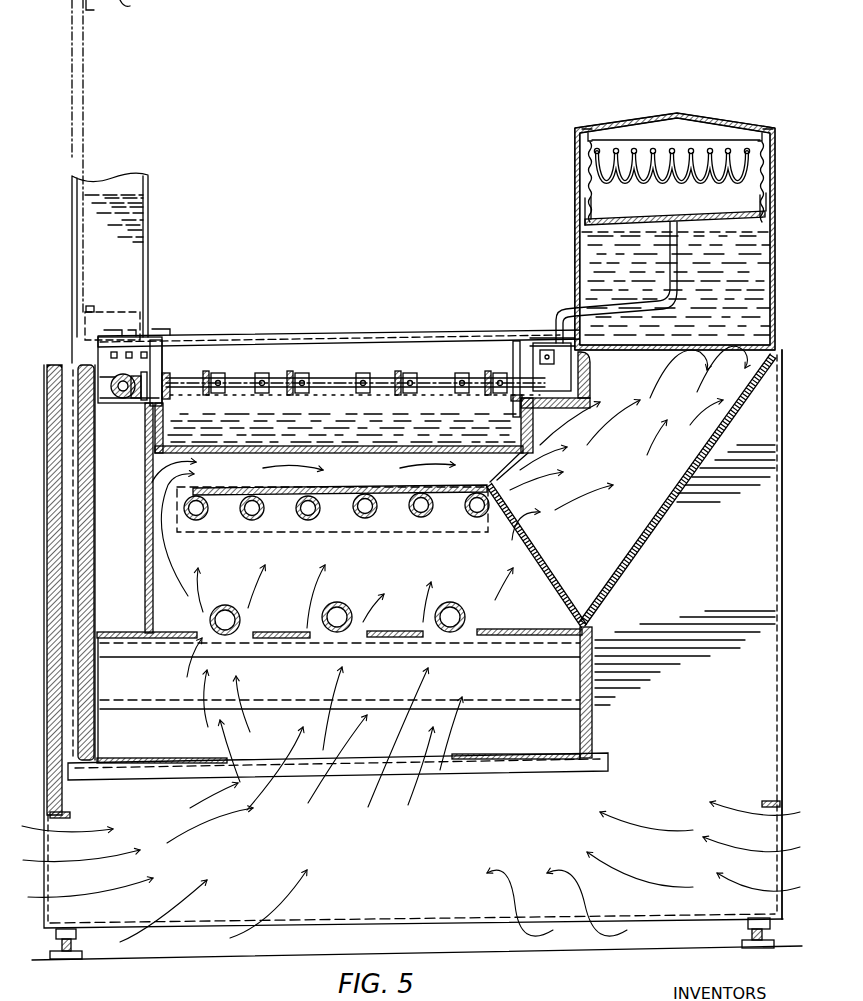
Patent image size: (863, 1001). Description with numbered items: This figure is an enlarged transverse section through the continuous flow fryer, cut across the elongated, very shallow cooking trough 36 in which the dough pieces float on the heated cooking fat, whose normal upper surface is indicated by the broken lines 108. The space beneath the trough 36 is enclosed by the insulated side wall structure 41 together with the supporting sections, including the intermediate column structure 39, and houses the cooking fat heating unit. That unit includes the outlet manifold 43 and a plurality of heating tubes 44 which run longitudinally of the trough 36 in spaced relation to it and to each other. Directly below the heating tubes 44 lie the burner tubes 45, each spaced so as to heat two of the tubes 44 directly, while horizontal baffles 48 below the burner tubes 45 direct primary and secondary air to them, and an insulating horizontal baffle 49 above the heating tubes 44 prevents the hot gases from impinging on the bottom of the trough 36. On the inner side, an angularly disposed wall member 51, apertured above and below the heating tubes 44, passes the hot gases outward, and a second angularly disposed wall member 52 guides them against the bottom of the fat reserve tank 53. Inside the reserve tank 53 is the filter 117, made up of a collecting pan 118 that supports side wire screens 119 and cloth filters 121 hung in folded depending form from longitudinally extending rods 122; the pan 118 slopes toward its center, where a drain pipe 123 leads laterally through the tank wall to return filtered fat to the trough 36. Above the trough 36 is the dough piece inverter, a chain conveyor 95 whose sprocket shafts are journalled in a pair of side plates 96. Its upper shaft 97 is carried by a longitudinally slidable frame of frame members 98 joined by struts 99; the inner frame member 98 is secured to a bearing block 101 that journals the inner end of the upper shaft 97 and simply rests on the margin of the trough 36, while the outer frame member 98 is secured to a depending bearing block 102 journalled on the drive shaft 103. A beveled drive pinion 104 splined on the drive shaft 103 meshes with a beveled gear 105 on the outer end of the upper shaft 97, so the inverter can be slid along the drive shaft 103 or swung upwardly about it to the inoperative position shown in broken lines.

The cooking trough 36 is at (405, 455).
The intermediate column structure 39 is at (177, 928).
The insulated side wall structure 41 is at (62, 540).
The outlet manifold 43 is at (262, 535).
The heating tubes 44 is at (318, 520).
The burner tubes 45 is at (352, 607).
The horizontal baffles 48 is at (300, 648).
The horizontal baffle 49 is at (258, 488).
The angularly disposed wall member 51 is at (545, 572).
The second angularly disposed wall member 52 is at (640, 552).
The fat reserve tank 53 is at (690, 115).
The chain conveyor 95 is at (396, 380).
The side plates 96 is at (160, 362).
The upper shaft 97 is at (285, 377).
The frame members 98 is at (165, 345).
The struts 99 is at (410, 333).
The bearing block 101 is at (590, 373).
The depending bearing block 102 is at (130, 315).
The drive shaft 103 is at (124, 396).
The beveled drive pinion 104 is at (118, 373).
The beveled gear 105 is at (137, 405).
The upper surface of the cooking fat 108 is at (357, 422).
The filter 117 is at (583, 157).
The collecting pan 118 is at (695, 222).
The side wire screens 119 is at (585, 190).
The cloth filters 121 is at (625, 162).
The rods 122 is at (650, 150).
The drain pipe 123 is at (648, 302).